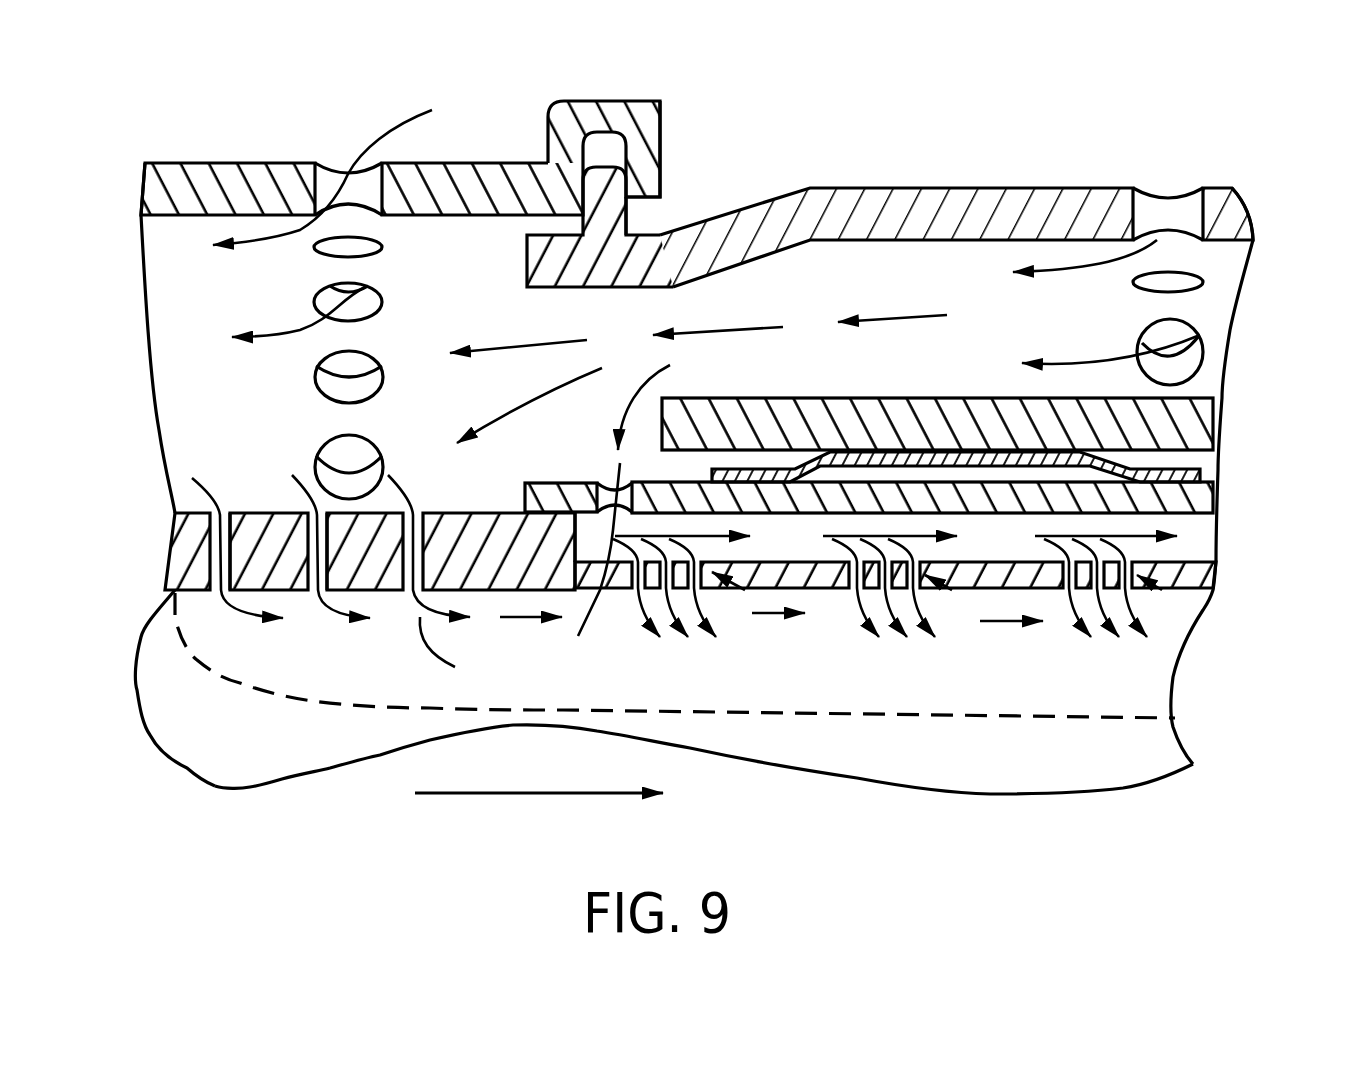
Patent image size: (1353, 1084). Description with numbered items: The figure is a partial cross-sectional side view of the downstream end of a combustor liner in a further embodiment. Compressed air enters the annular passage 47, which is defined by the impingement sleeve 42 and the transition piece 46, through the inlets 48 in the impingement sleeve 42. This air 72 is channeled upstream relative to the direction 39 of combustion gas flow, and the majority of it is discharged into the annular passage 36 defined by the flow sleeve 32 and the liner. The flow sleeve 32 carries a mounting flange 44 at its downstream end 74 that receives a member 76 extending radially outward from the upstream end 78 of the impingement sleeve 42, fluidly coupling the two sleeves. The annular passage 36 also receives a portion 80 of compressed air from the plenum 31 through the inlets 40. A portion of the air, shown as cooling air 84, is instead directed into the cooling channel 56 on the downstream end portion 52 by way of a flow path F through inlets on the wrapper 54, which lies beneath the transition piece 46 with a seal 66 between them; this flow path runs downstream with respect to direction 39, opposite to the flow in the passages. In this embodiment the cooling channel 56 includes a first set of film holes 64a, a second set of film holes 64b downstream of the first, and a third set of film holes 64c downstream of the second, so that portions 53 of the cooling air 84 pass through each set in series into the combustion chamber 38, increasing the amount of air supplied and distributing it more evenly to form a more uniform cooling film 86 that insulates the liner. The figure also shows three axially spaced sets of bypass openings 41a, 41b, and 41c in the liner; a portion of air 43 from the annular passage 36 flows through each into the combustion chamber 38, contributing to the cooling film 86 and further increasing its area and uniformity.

The plenum 31 is at (1150, 262).
The flow sleeve 32 is at (226, 163).
The annular passage 36 is at (215, 406).
The combustion chamber 38 is at (248, 744).
The direction of combustion gas flow 39 is at (518, 793).
The inlets 40 is at (363, 212).
The first set of bypass openings 41a is at (422, 512).
The second set of bypass openings 41b is at (307, 512).
The third set of bypass openings 41c is at (216, 512).
The impingement sleeve 42 is at (972, 188).
The air flow through bypass openings 43 is at (517, 617).
The mounting flange 44 is at (615, 101).
The transition piece 46 is at (1195, 427).
The annular passage 47 is at (891, 291).
The inlets 48 is at (1180, 243).
The downstream end portion 52 is at (945, 590).
The portion of cooling air 53 is at (767, 618).
The wrapper 54 is at (1192, 500).
The cooling channel 56 is at (1200, 545).
The first set of film holes 64a is at (737, 592).
The second set of film holes 64b is at (960, 592).
The third set of film holes 64c is at (1180, 593).
The seal 66 is at (1197, 468).
The air 72 is at (728, 328).
The downstream end 74 is at (666, 158).
The member 76 is at (627, 220).
The upstream end 78 is at (524, 263).
The portion of compressed air 80 is at (268, 232).
The cooling air 84 is at (594, 567).
The cooling film 86 is at (1028, 716).